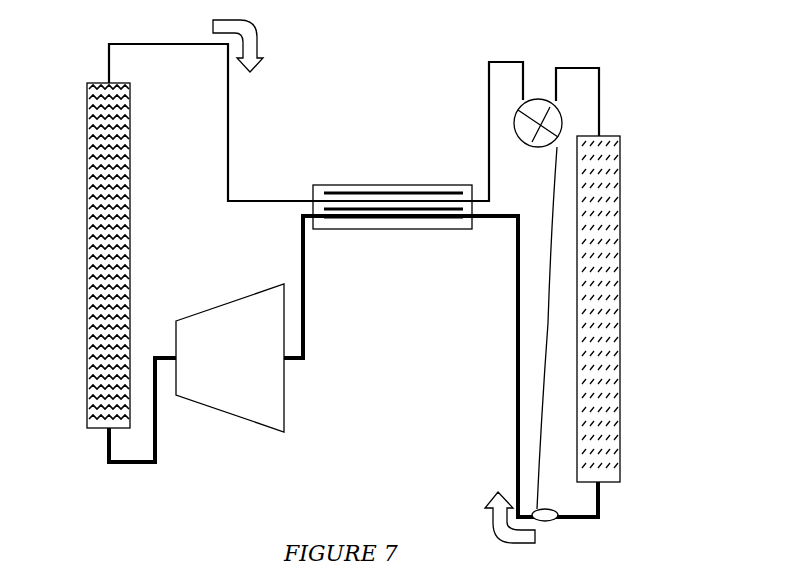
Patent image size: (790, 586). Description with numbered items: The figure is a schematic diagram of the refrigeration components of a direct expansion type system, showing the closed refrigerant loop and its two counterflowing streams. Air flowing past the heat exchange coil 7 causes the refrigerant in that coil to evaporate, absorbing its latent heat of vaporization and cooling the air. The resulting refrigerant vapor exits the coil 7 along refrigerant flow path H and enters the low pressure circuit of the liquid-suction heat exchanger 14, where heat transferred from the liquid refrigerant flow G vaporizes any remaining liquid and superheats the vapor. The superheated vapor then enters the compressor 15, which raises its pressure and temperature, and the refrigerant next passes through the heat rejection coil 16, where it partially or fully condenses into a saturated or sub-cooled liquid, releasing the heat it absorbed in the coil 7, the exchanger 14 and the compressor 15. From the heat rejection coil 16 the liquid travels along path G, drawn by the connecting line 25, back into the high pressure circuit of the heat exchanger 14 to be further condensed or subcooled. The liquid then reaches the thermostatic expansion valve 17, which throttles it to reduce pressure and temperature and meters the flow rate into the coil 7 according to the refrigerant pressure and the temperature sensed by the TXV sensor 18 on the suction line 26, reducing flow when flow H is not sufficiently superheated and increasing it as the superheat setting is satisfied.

The liquid refrigerant flow path G is at (213, 27).
The heat rejection coil 16 is at (87, 257).
The gas pipe 25 is at (228, 177).
The liquid-suction heat exchanger 14 is at (393, 229).
The fluid pipe 26 is at (518, 305).
The compressor 15 is at (232, 413).
The thermostatic expansion valve 17 is at (538, 100).
The heat exchange coil 7 is at (620, 310).
The TXV sensor 18 is at (555, 519).
The refrigerant flow path H is at (500, 493).